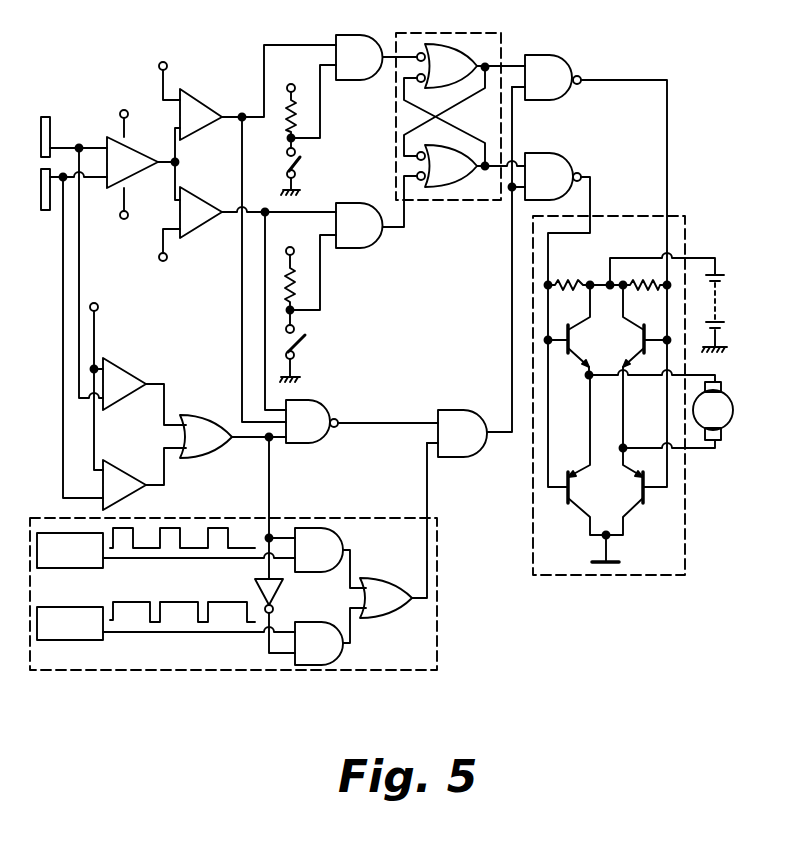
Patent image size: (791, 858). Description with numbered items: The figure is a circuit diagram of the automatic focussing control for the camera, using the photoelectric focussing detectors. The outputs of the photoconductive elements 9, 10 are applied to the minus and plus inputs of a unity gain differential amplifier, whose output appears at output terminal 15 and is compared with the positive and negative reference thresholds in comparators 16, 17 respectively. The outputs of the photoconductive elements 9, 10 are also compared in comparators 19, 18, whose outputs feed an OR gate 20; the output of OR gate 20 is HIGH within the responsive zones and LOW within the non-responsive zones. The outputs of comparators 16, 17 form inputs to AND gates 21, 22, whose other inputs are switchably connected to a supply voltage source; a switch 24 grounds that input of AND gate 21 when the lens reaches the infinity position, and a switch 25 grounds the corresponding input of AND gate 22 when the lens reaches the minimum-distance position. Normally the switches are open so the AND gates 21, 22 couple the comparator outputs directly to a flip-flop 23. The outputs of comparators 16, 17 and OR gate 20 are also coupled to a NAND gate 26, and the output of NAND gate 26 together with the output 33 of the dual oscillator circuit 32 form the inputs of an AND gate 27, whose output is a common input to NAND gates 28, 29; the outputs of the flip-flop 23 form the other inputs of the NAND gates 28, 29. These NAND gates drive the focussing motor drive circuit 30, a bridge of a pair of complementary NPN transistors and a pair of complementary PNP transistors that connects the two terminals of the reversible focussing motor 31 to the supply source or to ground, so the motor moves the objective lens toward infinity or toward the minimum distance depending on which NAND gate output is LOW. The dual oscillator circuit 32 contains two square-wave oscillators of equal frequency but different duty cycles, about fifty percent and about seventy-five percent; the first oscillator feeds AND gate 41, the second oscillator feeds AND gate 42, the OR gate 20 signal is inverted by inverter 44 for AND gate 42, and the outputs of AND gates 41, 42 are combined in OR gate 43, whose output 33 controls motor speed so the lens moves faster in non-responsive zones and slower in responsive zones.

The photoconductive element 9 is at (45, 210).
The photoconductive element 10 is at (50, 121).
The output terminal 15 is at (180, 163).
The comparator 16 is at (200, 113).
The comparator 17 is at (198, 205).
The comparator 18 is at (125, 375).
The comparator 19 is at (125, 470).
The OR gate 20 is at (200, 417).
The AND gate 21 is at (350, 68).
The AND gate 22 is at (350, 208).
The flip-flop 23 is at (477, 40).
The switch 24 is at (303, 172).
The switch 25 is at (303, 345).
The NAND gate 26 is at (322, 413).
The AND gate 27 is at (488, 388).
The NAND gate 28 is at (560, 67).
The NAND gate 29 is at (560, 165).
The focussing motor drive circuit 30 is at (640, 233).
The reversible focussing motor 31 is at (725, 420).
The dual oscillator circuit 32 is at (402, 540).
The output of oscillator circuit 33 is at (427, 488).
The AND gate 41 is at (315, 535).
The AND gate 42 is at (313, 652).
The OR gate 43 is at (387, 605).
The inverter 44 is at (275, 590).